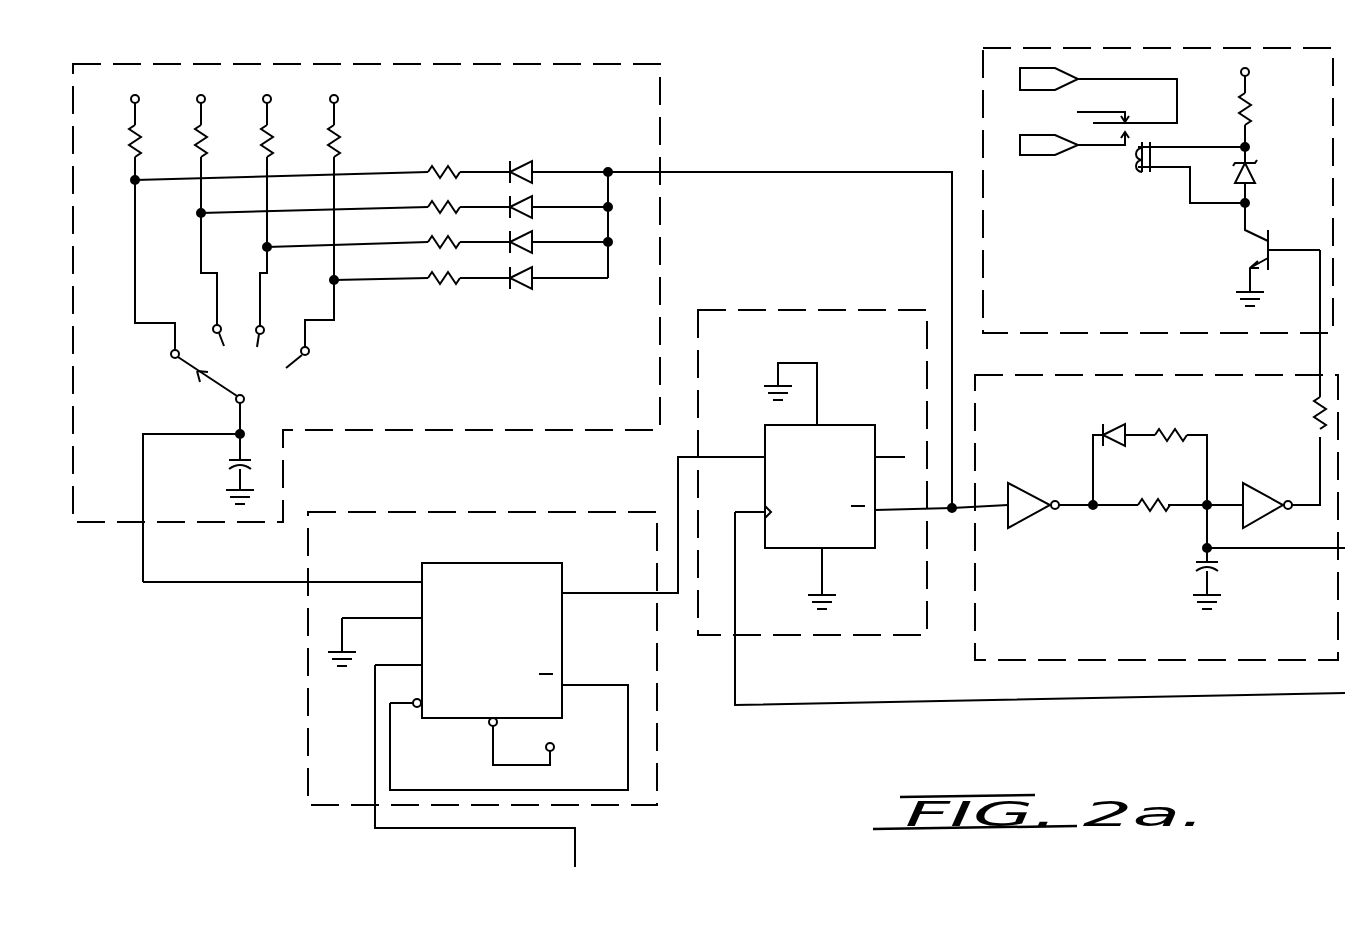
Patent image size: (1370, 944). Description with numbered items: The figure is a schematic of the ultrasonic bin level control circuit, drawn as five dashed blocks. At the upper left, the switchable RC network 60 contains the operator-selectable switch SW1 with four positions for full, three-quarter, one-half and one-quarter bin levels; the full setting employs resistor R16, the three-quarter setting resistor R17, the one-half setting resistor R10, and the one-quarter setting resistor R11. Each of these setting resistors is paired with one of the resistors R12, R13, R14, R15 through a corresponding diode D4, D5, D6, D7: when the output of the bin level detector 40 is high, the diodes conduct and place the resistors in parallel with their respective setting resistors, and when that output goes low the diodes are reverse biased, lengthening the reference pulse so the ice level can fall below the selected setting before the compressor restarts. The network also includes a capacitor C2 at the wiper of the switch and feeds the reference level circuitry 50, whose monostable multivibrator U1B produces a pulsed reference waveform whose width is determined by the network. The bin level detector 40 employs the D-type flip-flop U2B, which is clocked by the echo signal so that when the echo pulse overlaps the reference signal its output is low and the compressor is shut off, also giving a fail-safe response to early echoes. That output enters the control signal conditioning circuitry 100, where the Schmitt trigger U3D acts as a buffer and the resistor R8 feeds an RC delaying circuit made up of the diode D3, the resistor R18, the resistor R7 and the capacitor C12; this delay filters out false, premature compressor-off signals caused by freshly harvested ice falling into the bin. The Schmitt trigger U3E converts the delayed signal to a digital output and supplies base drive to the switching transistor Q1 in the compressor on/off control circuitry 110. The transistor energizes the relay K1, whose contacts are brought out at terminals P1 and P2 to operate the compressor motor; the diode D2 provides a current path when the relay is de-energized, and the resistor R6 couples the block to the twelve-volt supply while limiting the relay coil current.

The switchable RC network 60 is at (514, 323).
The reference level circuitry 50 is at (454, 662).
The bin level detector 40 is at (1021, 507).
The control signal conditioning circuitry 100 is at (1148, 455).
The compressor on/off control circuitry 110 is at (1158, 190).
The resistor R16 is at (132, 147).
The resistor R17 is at (197, 142).
The resistor R10 is at (263, 144).
The resistor R11 is at (332, 142).
The resistor R12 is at (428, 170).
The resistor R13 is at (428, 205).
The resistor R14 is at (428, 240).
The resistor R15 is at (428, 275).
The diode D4 is at (530, 172).
The diode D5 is at (530, 207).
The diode D6 is at (530, 242).
The diode D7 is at (530, 278).
The switch SW1 is at (235, 307).
The capacitor C2 is at (230, 468).
The monostable multivibrator U1B is at (454, 662).
The D-type flip-flop U2B is at (1040, 534).
The Schmitt trigger U3D is at (1028, 490).
The Schmitt trigger U3E is at (1268, 490).
The resistor R8 is at (1154, 500).
The resistor R18 is at (1179, 434).
The diode D3 is at (1116, 425).
The resistor R7 is at (1314, 418).
The capacitor C12 is at (1219, 570).
The resistor R6 is at (1251, 112).
The diode D2 is at (1257, 172).
The switching transistor Q1 is at (1260, 254).
The relay K1 is at (1161, 146).
The terminal P1 is at (1098, 95).
The terminal P2 is at (1049, 145).